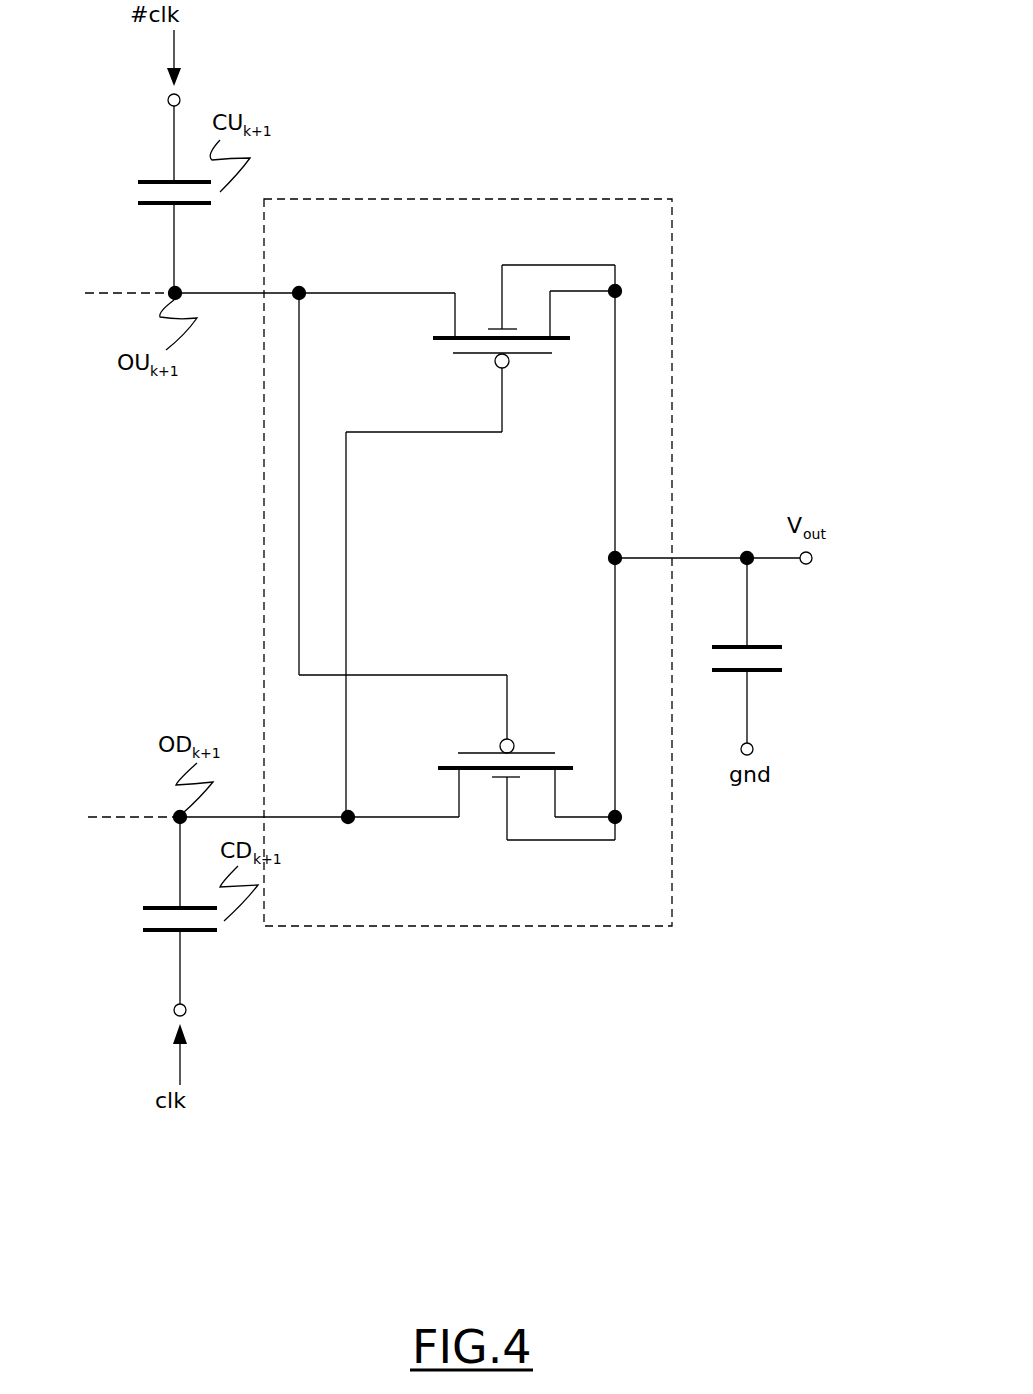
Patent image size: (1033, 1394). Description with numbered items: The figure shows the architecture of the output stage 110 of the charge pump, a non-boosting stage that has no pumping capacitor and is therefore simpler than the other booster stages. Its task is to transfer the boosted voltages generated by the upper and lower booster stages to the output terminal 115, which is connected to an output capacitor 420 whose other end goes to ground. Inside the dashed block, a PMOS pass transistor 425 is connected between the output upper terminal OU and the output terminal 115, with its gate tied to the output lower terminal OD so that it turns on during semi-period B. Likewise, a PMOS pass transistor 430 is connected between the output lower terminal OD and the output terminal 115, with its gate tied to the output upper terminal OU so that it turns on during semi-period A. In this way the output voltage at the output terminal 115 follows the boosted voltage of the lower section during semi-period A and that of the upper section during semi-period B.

The output stage 110 is at (623, 212).
The output terminal 115 is at (612, 556).
The output capacitor 420 is at (787, 660).
The PMOS pass transistor 425 is at (468, 285).
The PMOS pass transistor 430 is at (478, 815).